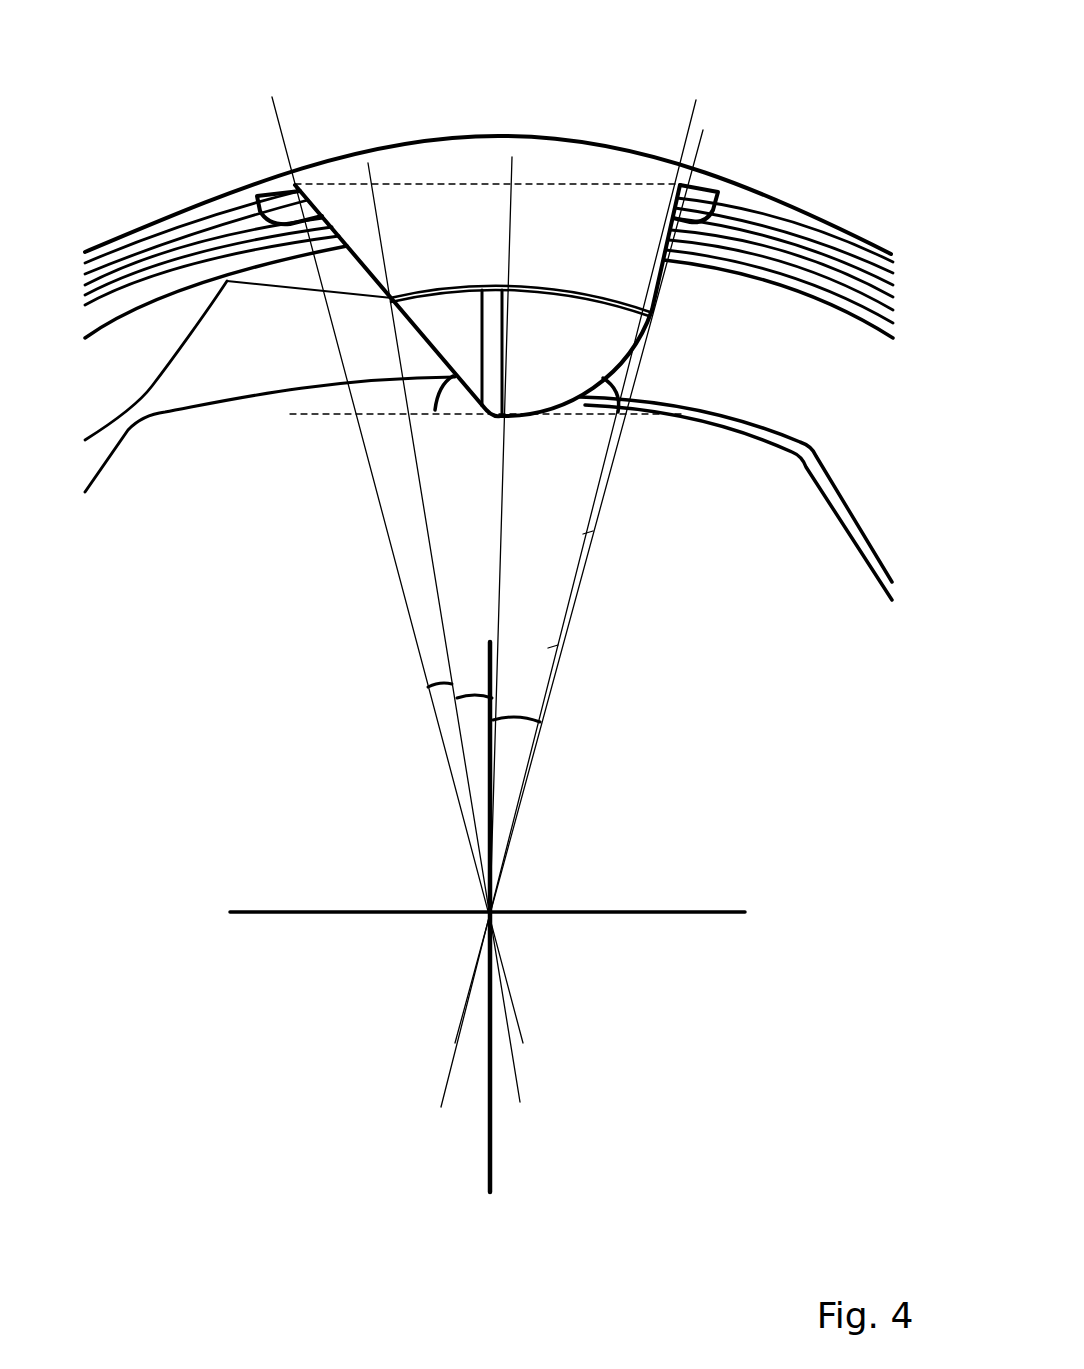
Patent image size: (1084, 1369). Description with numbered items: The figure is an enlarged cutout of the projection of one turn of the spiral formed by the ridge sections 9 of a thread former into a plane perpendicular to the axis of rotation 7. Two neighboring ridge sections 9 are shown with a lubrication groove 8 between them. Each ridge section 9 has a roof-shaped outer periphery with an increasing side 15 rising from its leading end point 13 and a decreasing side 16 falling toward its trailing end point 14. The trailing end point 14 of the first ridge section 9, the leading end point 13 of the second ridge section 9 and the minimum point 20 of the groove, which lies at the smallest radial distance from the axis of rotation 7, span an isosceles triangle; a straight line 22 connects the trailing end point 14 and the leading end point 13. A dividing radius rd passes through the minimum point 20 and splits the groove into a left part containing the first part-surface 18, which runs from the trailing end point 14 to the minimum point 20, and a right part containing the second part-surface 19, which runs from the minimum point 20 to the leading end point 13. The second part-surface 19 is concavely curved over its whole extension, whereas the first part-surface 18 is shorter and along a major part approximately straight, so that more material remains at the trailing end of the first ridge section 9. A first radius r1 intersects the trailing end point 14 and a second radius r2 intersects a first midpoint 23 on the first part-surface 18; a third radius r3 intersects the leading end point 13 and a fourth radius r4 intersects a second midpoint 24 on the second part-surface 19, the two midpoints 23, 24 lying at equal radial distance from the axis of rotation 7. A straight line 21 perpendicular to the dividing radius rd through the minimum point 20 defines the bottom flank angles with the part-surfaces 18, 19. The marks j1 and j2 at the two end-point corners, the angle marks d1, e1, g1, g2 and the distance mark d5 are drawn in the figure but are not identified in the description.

The axis of rotation 7 is at (492, 914).
The lubrication groove 8 is at (472, 152).
The ridge section 9 is at (190, 233).
The leading end point 13 is at (697, 163).
The trailing end point 14 is at (273, 112).
The increasing side 15 is at (228, 206).
The decreasing side 16 is at (768, 206).
The first part-surface 18 is at (363, 258).
The second part-surface 19 is at (613, 358).
The minimum point 20 is at (505, 410).
The straight line perpendicular to the dividing radius 21 is at (291, 415).
The straight line connecting the trailing end point and the leading end point 22 is at (436, 183).
The first midpoint 23 is at (390, 298).
The second midpoint 24 is at (650, 310).
The left gap j1 is at (295, 185).
The right gap j2 is at (697, 222).
The first radius r1 is at (392, 545).
The second radius r2 is at (440, 607).
The third radius r3 is at (590, 535).
The fourth radius r4 is at (613, 460).
The dividing radius rd is at (503, 452).
The angle d1 is at (450, 705).
The angle e1 is at (475, 758).
The distance d5 is at (553, 667).
The left fillet g1 is at (465, 402).
The right fillet g2 is at (578, 407).